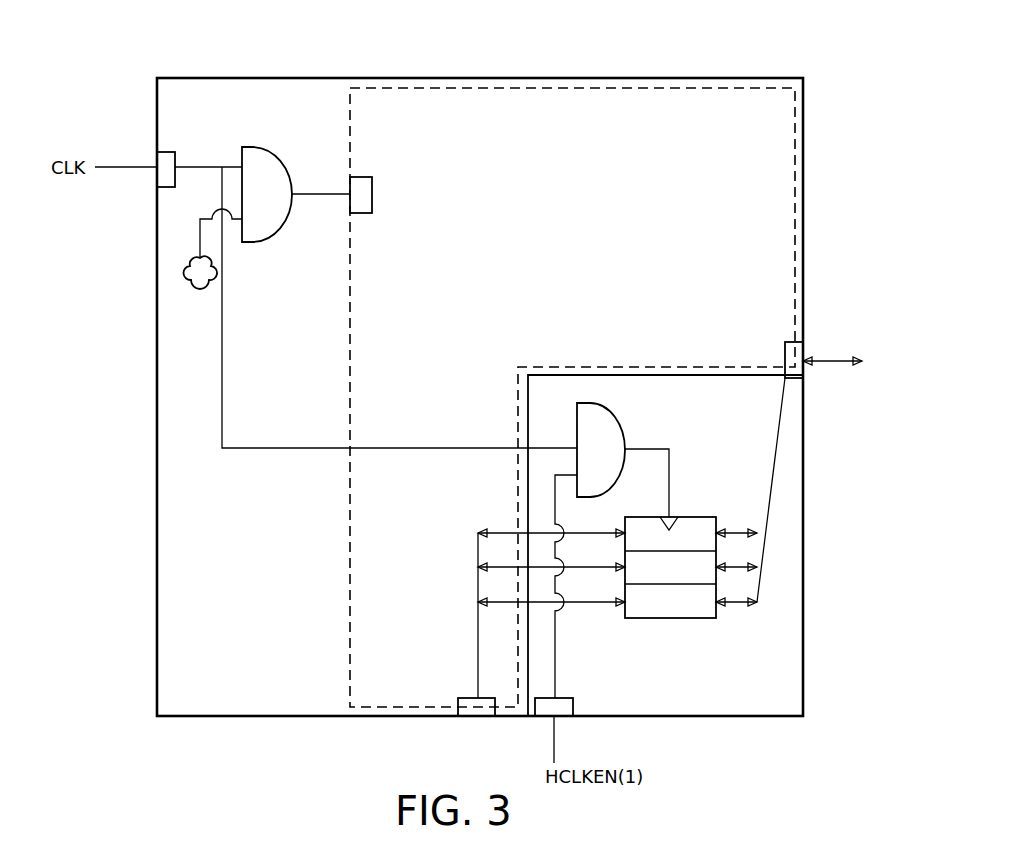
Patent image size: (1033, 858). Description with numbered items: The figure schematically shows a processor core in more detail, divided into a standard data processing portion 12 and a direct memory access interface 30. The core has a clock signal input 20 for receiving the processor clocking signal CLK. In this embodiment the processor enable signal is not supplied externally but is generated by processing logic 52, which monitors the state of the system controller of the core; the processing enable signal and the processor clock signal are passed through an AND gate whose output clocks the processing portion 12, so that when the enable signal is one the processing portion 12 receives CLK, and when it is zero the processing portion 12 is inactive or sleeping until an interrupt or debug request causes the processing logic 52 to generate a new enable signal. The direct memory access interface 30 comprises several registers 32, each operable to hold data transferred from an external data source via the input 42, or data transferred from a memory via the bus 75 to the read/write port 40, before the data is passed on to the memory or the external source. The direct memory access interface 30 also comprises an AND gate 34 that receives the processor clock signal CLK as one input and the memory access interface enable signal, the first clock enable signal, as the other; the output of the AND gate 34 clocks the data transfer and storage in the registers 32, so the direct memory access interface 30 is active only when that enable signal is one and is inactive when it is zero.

The processing portion 12 is at (776, 88).
The clock signal input 20 is at (157, 153).
The direct memory access interface 30 is at (805, 598).
The registers 32 is at (670, 618).
The AND gate 34 is at (604, 404).
The read/write port 40 is at (803, 347).
The input 42 is at (463, 718).
The processing logic 52 is at (188, 270).
The bus 75 is at (848, 365).